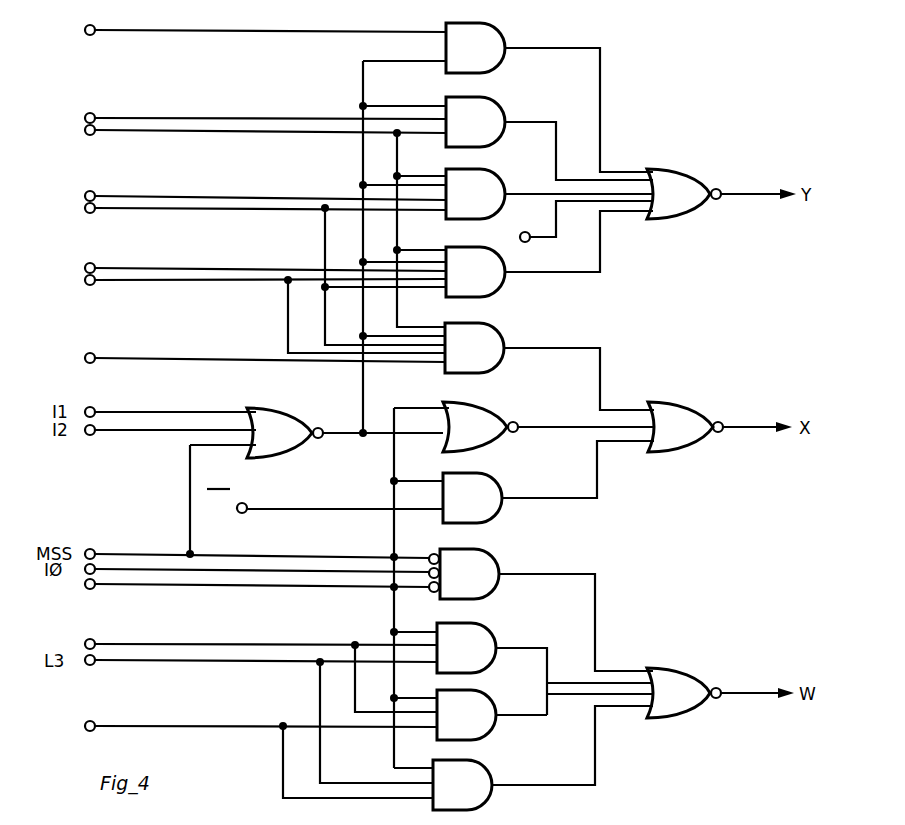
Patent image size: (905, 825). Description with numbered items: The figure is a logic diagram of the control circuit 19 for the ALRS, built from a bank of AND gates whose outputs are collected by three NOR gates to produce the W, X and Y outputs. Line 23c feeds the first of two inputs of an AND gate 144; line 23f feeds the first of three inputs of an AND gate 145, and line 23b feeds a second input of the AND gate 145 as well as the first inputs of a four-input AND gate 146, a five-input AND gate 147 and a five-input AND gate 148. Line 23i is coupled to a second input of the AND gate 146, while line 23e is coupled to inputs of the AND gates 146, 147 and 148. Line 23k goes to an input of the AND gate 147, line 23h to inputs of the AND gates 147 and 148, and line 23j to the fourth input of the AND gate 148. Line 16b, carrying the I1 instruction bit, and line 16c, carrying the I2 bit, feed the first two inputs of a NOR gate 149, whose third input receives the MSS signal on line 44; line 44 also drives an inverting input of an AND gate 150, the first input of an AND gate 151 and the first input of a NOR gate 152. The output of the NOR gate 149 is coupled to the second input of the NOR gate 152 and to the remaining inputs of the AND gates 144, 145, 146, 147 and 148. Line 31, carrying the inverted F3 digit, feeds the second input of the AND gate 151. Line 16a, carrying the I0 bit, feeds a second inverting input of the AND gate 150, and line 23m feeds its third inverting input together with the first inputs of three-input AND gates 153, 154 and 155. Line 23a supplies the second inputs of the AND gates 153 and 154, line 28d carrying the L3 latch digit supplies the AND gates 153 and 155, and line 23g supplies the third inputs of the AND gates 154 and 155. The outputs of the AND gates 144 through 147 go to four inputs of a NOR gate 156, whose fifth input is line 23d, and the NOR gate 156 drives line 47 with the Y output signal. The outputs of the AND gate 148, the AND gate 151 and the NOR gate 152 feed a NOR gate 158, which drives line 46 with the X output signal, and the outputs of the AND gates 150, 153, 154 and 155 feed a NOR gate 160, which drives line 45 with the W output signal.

The line 23c is at (113, 30).
The line 23f is at (112, 118).
The line 23b is at (112, 131).
The line 23i is at (114, 196).
The line 23e is at (113, 209).
The line 23k is at (114, 268).
The line 23h is at (113, 281).
The line 23j is at (114, 358).
The line 23d is at (531, 238).
The line 23m is at (123, 585).
The line 23a is at (120, 644).
The line 23g is at (122, 726).
The line 28d is at (120, 661).
The line 16b is at (118, 412).
The line 16c is at (118, 431).
The line 16a is at (108, 570).
The line 44 is at (122, 554).
The line 31 is at (300, 510).
The AND gate 144 is at (480, 60).
The AND gate 145 is at (480, 134).
The AND gate 146 is at (480, 206).
The AND gate 147 is at (480, 284).
The AND gate 148 is at (479, 360).
The NOR gate 149 is at (282, 445).
The AND gate 150 is at (474, 586).
The AND gate 151 is at (477, 510).
The NOR gate 152 is at (479, 439).
The AND gate 153 is at (471, 660).
The AND gate 154 is at (471, 727).
The AND gate 155 is at (467, 797).
The NOR gate 156 is at (683, 206).
The NOR gate 158 is at (684, 439).
The NOR gate 160 is at (683, 705).
The line 47 is at (740, 194).
The line 46 is at (735, 427).
The line 45 is at (730, 693).
The control circuit 19 is at (674, 511).